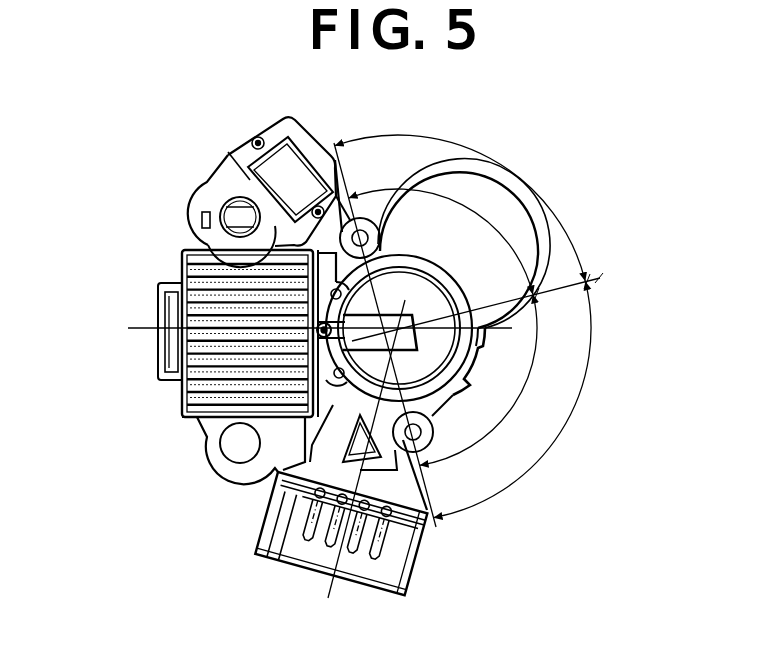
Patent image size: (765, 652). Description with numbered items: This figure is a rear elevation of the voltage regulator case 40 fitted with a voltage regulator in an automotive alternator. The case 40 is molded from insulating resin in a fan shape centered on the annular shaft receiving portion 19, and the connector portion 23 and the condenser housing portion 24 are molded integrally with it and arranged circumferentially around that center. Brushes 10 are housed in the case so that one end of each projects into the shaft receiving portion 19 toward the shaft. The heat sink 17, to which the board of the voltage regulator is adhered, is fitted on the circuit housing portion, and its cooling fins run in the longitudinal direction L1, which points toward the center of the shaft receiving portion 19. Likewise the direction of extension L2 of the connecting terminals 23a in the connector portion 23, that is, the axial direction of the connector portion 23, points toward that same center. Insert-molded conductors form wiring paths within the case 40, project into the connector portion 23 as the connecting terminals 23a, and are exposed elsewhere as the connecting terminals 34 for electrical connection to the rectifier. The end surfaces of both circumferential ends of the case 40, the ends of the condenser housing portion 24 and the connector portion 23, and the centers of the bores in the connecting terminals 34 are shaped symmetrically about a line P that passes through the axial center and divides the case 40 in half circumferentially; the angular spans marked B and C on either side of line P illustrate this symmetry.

The brushes 10 is at (487, 358).
The heat sink 17 is at (200, 263).
The annular shaft receiving portion 19 is at (476, 348).
The connector portion 23 is at (349, 551).
The connecting terminals 23a is at (383, 543).
The condenser housing portion 24 is at (252, 140).
The connecting terminals 34 is at (379, 228).
The voltage regulator case 40 is at (165, 403).
The longitudinal direction of the cooling fins L1 is at (150, 328).
The direction of extension of the connecting terminals L2 is at (325, 586).
The line P is at (553, 287).
The angle B is at (443, 322).
The angle C is at (463, 325).